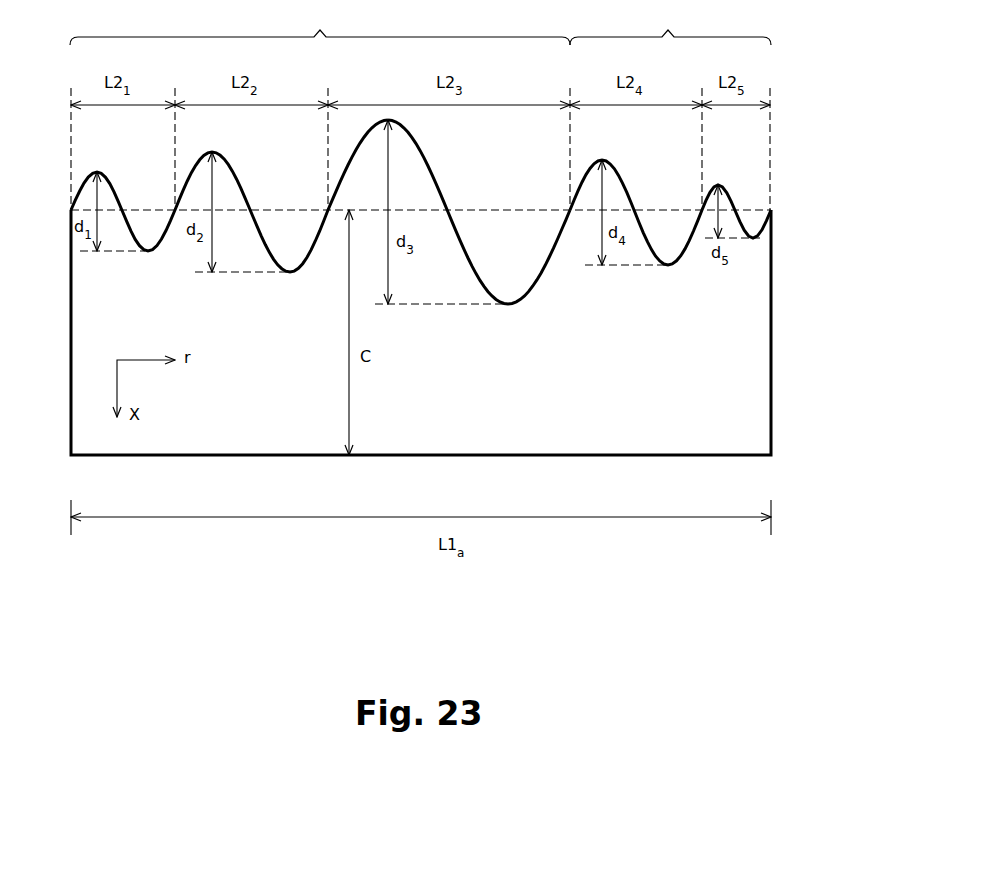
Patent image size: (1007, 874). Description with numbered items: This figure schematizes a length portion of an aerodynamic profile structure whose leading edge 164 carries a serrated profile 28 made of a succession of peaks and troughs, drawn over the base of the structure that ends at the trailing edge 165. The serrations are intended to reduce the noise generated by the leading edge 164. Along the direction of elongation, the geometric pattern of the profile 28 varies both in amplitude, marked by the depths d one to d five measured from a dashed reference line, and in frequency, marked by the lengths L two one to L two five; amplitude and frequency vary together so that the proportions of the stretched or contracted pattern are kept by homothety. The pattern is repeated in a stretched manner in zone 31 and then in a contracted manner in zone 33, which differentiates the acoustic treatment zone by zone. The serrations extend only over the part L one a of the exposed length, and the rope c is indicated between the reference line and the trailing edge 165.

The zone 31 is at (320, 25).
The zone 33 is at (670, 25).
The leading edge 164 is at (421, 212).
The profile 28 is at (476, 263).
The trailing edge 165 is at (722, 457).